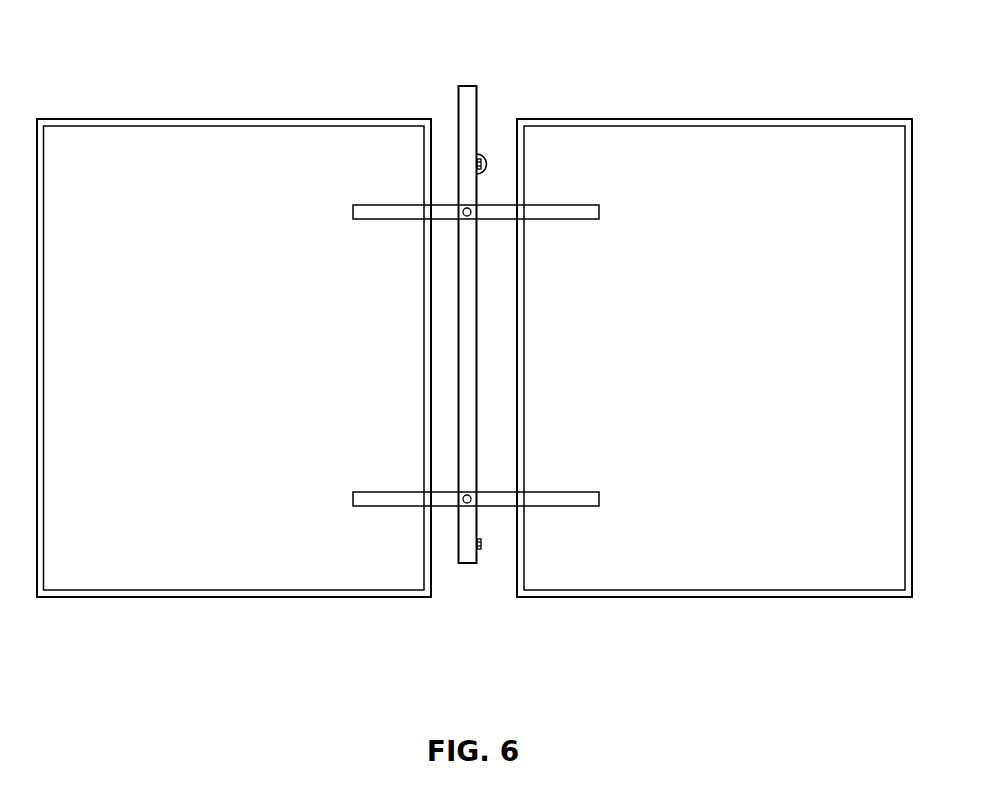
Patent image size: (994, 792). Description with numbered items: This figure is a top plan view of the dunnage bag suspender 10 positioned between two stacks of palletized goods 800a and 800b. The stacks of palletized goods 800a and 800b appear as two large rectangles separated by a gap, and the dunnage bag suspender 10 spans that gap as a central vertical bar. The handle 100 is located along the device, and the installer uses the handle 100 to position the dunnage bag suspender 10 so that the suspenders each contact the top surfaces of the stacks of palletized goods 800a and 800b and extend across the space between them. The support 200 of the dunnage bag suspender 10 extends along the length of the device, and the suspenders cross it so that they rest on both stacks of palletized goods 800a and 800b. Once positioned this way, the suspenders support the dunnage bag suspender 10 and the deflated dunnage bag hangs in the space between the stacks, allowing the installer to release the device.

The dunnage bag suspender 10 is at (446, 92).
The handle 100 is at (485, 151).
The support 200 is at (466, 565).
The stack of palletized goods 800a is at (190, 110).
The stack of palletized goods 800b is at (742, 115).